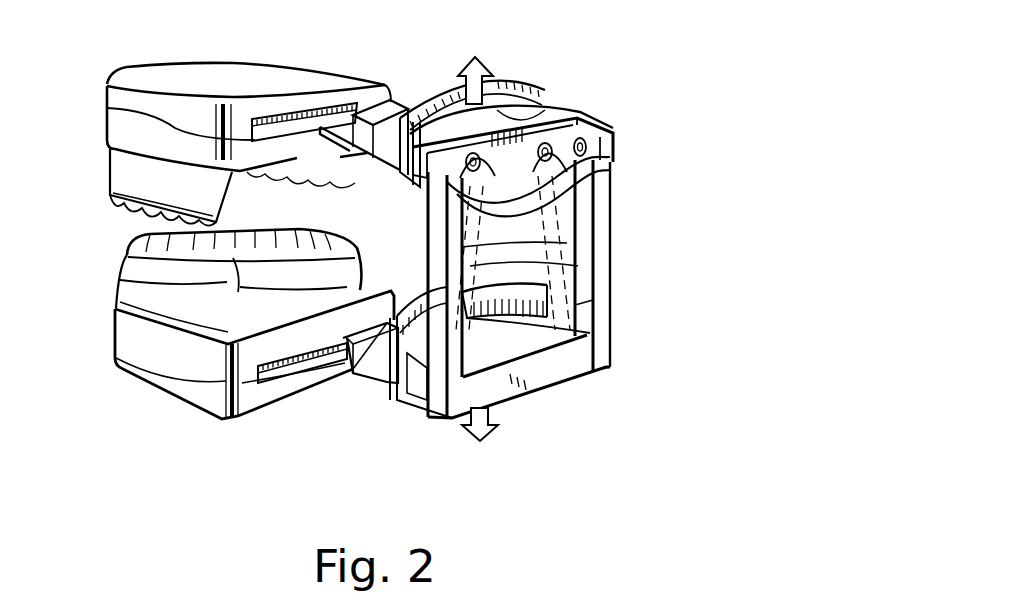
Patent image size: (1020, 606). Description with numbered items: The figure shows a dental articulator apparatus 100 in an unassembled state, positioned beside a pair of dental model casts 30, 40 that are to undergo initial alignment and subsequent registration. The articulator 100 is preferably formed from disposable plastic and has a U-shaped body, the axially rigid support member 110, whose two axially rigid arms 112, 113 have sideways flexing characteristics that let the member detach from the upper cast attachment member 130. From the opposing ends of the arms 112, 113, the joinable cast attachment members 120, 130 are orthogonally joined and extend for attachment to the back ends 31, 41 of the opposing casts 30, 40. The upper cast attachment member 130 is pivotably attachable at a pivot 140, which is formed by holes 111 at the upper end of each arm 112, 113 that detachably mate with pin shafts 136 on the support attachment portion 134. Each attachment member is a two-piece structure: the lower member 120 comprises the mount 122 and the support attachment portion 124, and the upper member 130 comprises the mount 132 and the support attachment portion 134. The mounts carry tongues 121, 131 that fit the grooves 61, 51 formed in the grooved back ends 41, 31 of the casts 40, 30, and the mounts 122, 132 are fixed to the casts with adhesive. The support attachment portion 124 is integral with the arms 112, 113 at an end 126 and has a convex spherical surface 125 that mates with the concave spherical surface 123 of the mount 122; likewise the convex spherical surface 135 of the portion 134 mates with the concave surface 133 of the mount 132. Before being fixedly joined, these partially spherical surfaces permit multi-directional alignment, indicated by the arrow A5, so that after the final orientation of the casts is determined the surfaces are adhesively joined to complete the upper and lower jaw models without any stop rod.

The upper dental model cast 30 is at (160, 77).
The grooved back end of upper cast 31 is at (262, 103).
The groove of upper cast 51 is at (110, 109).
The upper cast attachment member 130 is at (367, 153).
The cast attachment end (tongue) of upper attachment member 131 is at (354, 113).
The upper cast mount portion 132 is at (392, 101).
The concave spherical surface of upper mount 133 is at (384, 168).
The dental articulator apparatus 100 is at (619, 55).
The upper support attachment portion 134 is at (563, 108).
The convex spherical surface of upper support attachment portion 135 is at (560, 120).
The pivot 140 is at (585, 150).
The holes 111 is at (545, 160).
The pin shafts 136 is at (526, 154).
The axially rigid support member 110 is at (606, 216).
The axially rigid arm 112 is at (519, 289).
The axially rigid arm 113 is at (519, 376).
The concave spherical surface of lower mount 123 is at (597, 303).
The lower support attachment portion 124 is at (607, 367).
The convex spherical surface of lower support attachment portion 125 is at (481, 322).
The lower dental model cast 40 is at (152, 343).
The grooved back end of lower cast 41 is at (247, 368).
The groove of lower cast 61 is at (265, 378).
The cast attachment end (tongue) of lower attachment member 121 is at (343, 345).
The lower cast attachment member 120 is at (381, 373).
The lower cast mount portion 122 is at (301, 388).
The support attachment end of lower attachment member 126 is at (409, 402).
The alignment motion arrow A5 is at (488, 77).